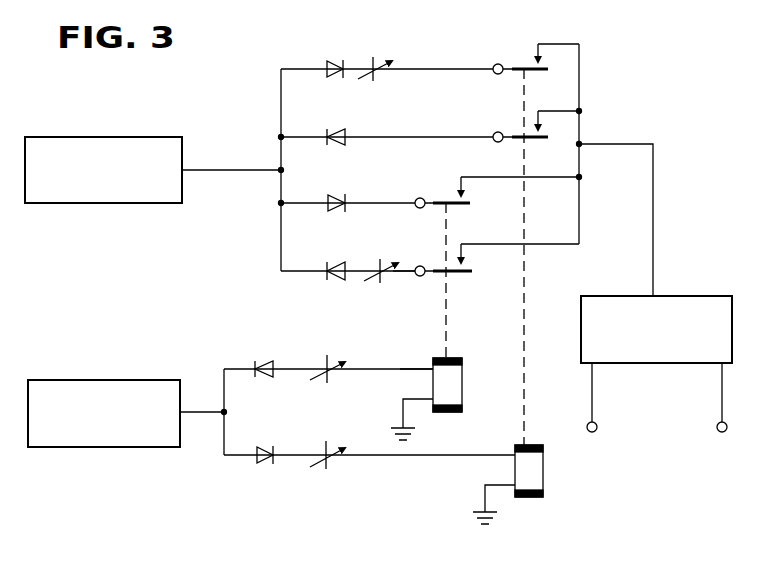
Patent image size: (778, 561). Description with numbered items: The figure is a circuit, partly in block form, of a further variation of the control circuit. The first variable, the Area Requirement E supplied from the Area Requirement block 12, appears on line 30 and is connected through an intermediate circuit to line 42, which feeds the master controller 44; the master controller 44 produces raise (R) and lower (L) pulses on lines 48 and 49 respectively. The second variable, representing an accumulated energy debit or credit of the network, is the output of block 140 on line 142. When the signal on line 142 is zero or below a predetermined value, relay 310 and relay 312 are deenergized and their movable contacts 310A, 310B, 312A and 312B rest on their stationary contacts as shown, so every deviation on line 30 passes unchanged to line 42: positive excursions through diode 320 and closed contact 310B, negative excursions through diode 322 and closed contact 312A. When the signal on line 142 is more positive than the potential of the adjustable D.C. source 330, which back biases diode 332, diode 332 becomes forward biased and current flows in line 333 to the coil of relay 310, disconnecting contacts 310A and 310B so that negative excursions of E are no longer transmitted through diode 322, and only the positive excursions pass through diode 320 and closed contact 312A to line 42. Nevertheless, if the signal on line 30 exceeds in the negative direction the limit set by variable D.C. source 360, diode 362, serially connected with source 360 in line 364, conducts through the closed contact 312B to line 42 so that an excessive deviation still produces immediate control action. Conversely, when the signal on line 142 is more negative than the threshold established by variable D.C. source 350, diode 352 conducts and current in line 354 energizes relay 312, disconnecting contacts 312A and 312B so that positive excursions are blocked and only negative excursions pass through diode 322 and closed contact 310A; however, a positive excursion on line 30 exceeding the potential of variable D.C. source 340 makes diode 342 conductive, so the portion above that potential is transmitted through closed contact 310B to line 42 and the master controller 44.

The area requirement unit 12 is at (80, 137).
The line 30 is at (245, 170).
The diode 342 is at (334, 58).
The variable D.C. source 340 is at (372, 58).
The diode 322 is at (337, 128).
The diode 320 is at (337, 195).
The diode 362 is at (337, 261).
The variable D.C. source 360 is at (378, 259).
The line 364 is at (405, 260).
The relay contact 310B is at (532, 73).
The relay contact 310A is at (532, 141).
The relay contact 312A is at (462, 207).
The relay contact 312B is at (462, 275).
The line 42 is at (626, 144).
The master controller 44 is at (703, 296).
The line 48 is at (592, 386).
The line 49 is at (722, 380).
The block 140 is at (72, 380).
The line 142 is at (206, 414).
The line 333 is at (224, 436).
The diode 352 is at (268, 358).
The variable D.C. source 350 is at (326, 352).
The line 354 is at (398, 372).
The diode 332 is at (268, 445).
The adjustable D.C. source 330 is at (322, 442).
The relay 312 is at (463, 378).
The relay 310 is at (543, 466).